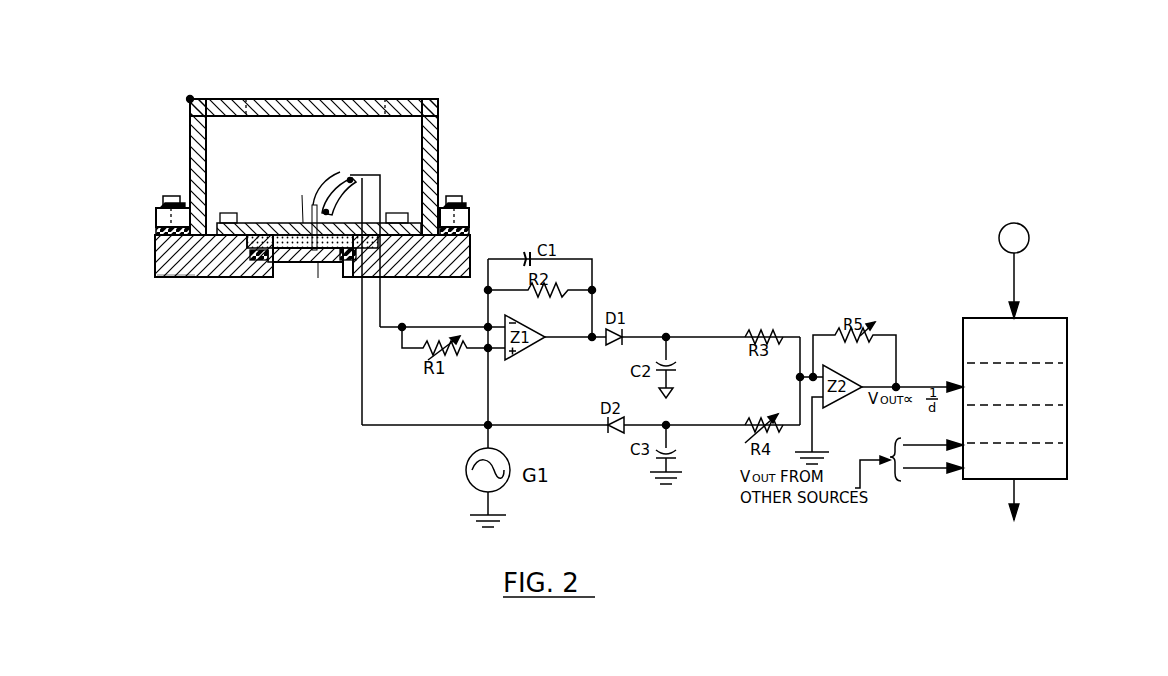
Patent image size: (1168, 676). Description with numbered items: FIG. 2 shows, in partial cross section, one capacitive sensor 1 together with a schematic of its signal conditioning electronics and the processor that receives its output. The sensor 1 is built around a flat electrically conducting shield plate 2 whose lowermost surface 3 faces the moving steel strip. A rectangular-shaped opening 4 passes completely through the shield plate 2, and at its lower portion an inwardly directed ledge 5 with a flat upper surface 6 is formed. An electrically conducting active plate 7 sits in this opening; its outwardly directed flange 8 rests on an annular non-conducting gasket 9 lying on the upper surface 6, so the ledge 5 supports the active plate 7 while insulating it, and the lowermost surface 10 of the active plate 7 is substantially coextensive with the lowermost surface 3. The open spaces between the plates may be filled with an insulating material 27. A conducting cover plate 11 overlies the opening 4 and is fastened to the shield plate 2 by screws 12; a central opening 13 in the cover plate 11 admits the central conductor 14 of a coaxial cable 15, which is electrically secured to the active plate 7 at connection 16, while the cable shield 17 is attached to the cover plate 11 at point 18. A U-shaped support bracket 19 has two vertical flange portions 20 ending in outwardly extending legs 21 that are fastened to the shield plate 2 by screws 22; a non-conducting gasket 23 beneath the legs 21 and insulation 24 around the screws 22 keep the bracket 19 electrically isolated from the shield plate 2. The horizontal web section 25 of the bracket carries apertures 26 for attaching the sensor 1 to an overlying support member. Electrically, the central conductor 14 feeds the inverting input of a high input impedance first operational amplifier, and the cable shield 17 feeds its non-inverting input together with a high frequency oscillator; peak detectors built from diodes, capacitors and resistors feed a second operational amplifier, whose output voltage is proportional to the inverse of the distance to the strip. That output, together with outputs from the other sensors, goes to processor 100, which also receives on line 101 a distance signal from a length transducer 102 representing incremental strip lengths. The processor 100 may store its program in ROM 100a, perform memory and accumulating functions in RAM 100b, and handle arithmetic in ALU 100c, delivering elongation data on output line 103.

The sensor 1 is at (188, 282).
The shield plate 2 is at (157, 250).
The lowermost surface 3 is at (206, 277).
The rectangular-shaped opening 4 is at (283, 264).
The ledge 5 is at (274, 268).
The upper surface 6 is at (271, 240).
The active plate 7 is at (346, 264).
The flange 8 is at (378, 196).
The gasket 9 is at (262, 255).
The lowermost surface 10 is at (318, 264).
The cover plate 11 is at (259, 222).
The screws 12 is at (228, 213).
The central opening 13 is at (302, 222).
The central conductor 14 is at (307, 264).
The coaxial cable 15 is at (330, 178).
The electrical connection 16 is at (296, 262).
The cable shield 17 is at (320, 178).
The attachment point 18 is at (362, 182).
The support bracket 19 is at (190, 99).
The flange portions 20 is at (190, 139).
The legs 21 is at (157, 213).
The screws 22 is at (190, 205).
The gasket 23 is at (157, 231).
The insulation 24 is at (164, 204).
The web section 25 is at (330, 99).
The apertures 26 is at (262, 108).
The insulating material 27 is at (470, 243).
The processor 100 is at (1050, 318).
The ROM 100a is at (1056, 470).
The RAM 100b is at (1056, 440).
The ALU 100c is at (1052, 398).
The line 101 is at (1018, 274).
The length transducer 102 is at (999, 233).
The line 103 is at (1010, 495).